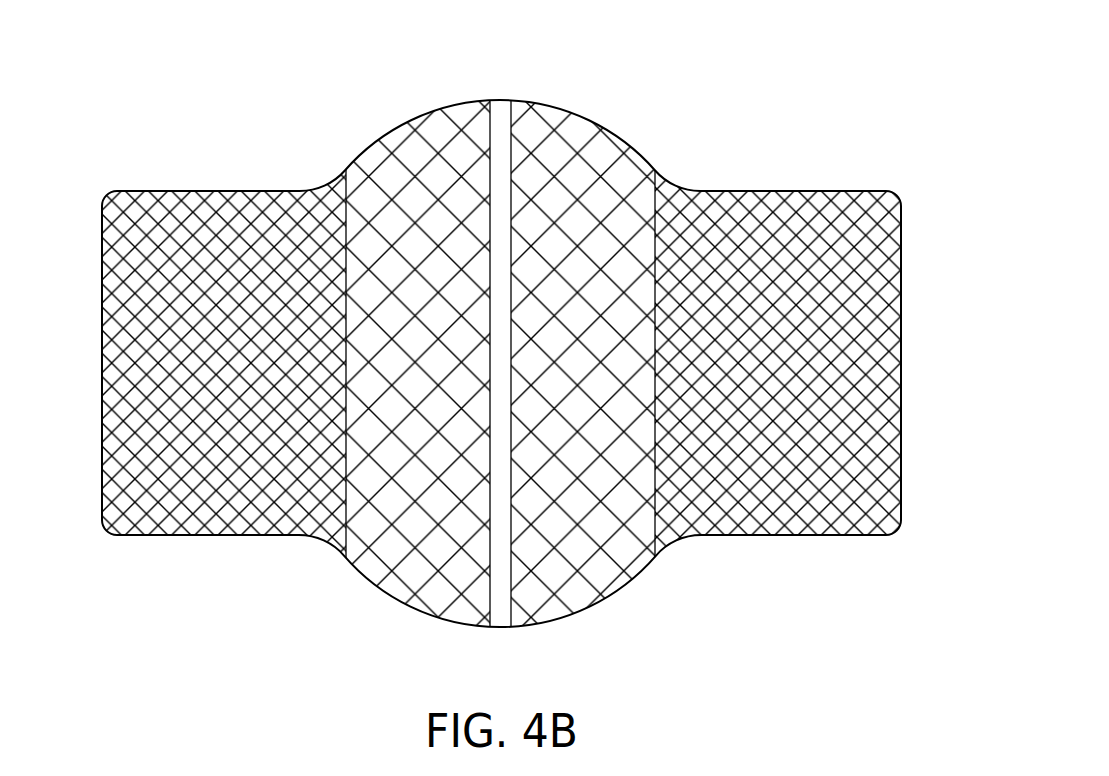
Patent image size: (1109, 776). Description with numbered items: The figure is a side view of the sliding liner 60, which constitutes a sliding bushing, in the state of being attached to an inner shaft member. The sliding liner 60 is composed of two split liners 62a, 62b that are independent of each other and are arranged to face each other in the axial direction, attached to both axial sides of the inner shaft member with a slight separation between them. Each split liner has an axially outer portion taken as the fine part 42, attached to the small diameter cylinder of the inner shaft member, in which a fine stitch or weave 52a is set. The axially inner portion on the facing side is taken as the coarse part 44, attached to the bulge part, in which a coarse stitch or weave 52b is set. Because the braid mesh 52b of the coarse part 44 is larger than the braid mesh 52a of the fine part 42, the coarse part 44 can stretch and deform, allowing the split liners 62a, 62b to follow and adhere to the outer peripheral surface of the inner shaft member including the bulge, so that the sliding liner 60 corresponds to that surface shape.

The sliding liner 60 is at (860, 113).
The split liner 62a is at (148, 186).
The split liner 62b is at (825, 181).
The fine part 42 is at (224, 540).
The coarse part 44 is at (618, 601).
The fine stitch or weave 52a is at (180, 253).
The coarse stitch or weave 52b is at (400, 161).